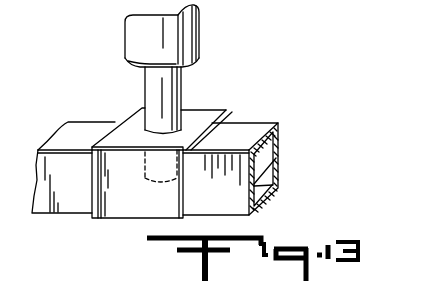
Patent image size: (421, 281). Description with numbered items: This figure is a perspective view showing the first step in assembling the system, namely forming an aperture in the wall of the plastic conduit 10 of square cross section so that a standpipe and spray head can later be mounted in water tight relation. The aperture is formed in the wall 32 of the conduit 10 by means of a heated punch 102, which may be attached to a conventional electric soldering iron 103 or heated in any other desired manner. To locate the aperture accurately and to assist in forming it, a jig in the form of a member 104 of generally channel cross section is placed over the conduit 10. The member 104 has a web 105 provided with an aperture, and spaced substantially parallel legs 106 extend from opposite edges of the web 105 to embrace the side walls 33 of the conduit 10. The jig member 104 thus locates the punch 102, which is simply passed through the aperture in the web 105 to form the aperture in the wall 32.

The conduit 10 is at (259, 123).
The wall 32 is at (278, 130).
The side walls 33 is at (256, 184).
The heated punch 102 is at (181, 74).
The electric soldering iron 103 is at (197, 18).
The jig member 104 is at (236, 101).
The web 105 is at (118, 122).
The legs 106 is at (232, 114).